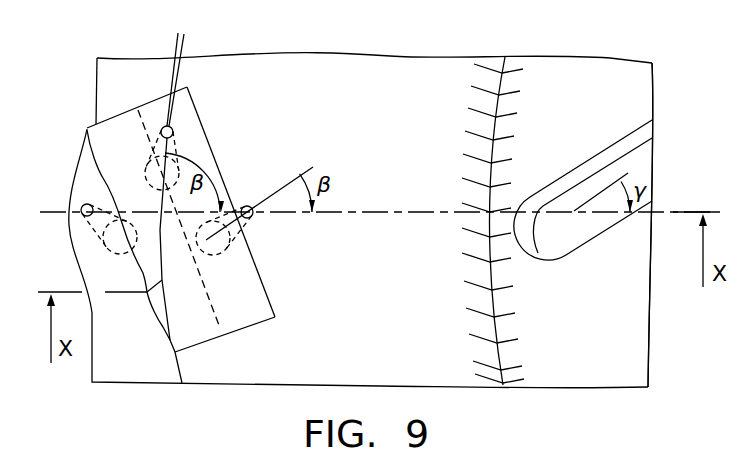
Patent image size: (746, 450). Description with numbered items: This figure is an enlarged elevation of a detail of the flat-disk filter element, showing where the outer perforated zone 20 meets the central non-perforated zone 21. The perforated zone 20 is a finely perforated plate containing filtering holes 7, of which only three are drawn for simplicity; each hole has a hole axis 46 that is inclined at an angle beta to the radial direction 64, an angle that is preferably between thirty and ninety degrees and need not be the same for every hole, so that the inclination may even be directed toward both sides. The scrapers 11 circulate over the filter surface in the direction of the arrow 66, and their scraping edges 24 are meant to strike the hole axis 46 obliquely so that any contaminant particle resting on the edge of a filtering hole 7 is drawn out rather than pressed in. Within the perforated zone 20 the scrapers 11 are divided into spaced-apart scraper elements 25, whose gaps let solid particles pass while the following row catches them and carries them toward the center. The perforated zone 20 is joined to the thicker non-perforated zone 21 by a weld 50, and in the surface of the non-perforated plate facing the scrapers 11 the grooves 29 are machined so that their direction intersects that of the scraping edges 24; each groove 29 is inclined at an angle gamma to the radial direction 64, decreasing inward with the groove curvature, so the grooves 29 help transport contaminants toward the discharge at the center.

The filtering holes 7 is at (174, 132).
The scrapers 11 is at (199, 212).
The perforated zone 20 is at (302, 363).
The non-perforated zone 21 is at (593, 348).
The scraping edges 24 is at (272, 280).
The scraper elements 25 is at (117, 137).
The grooves 29 is at (578, 237).
The hole axes 46 is at (160, 67).
The weld 50 is at (513, 118).
The radial direction 64 is at (344, 200).
The arrow 66 is at (199, 72).